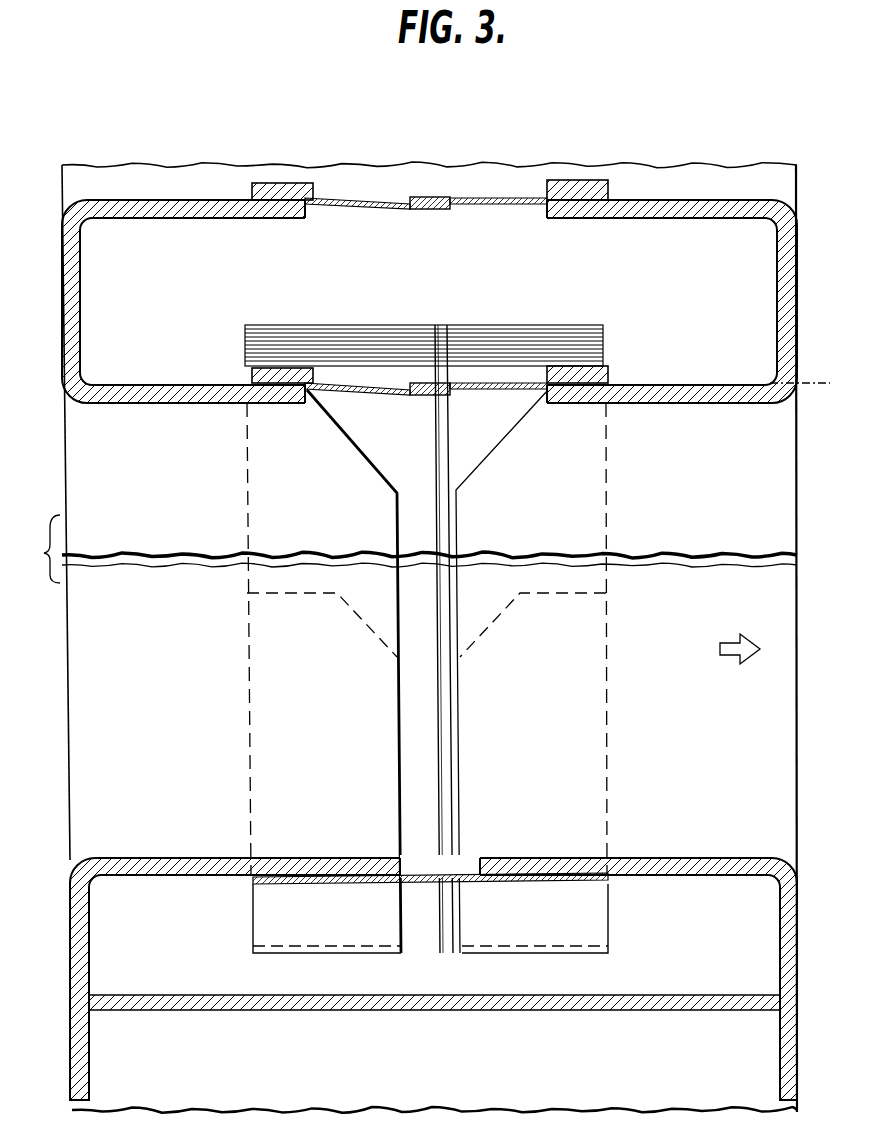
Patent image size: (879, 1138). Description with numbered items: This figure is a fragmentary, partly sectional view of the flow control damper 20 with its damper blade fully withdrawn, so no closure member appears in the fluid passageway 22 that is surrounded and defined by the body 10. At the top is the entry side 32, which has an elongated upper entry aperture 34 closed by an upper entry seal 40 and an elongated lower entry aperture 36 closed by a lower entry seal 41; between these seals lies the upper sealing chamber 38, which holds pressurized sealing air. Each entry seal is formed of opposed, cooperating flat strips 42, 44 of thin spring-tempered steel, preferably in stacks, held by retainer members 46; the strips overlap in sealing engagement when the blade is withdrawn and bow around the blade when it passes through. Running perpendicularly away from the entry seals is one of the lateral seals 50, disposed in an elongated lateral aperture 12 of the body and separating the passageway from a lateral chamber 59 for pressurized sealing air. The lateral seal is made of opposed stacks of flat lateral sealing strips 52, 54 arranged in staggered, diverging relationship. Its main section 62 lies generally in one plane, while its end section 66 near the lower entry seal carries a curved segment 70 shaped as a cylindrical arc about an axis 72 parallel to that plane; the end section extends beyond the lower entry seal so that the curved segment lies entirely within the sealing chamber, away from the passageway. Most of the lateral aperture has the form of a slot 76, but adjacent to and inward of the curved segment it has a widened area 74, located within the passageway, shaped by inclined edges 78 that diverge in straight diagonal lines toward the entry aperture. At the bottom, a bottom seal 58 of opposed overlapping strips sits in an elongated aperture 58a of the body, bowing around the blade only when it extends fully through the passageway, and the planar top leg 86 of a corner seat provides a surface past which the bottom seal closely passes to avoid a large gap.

The body 10 is at (806, 217).
The lateral aperture 12 is at (456, 535).
The damper 20 is at (810, 300).
The fluid passageway 22 is at (730, 688).
The entry side 32 is at (693, 222).
The upper entry aperture 34 is at (545, 195).
The lower entry aperture 36 is at (325, 370).
The upper sealing chamber 38 is at (611, 238).
The upper entry seal 40 is at (420, 196).
The lower entry seal 41 is at (507, 382).
The sealing strip 42 is at (345, 197).
The sealing strip 44 is at (462, 197).
The retainer member 46 is at (252, 378).
The lateral seal 50 is at (452, 505).
The lateral sealing strip 52 is at (452, 835).
The lateral sealing strip 54 is at (404, 812).
The bottom seal 58 is at (470, 880).
The elongated aperture 58a is at (404, 855).
The lateral chamber 59 is at (740, 937).
The main section 62 is at (399, 690).
The end section 66 is at (616, 346).
The curved segment 70 is at (495, 337).
The axis 72 is at (820, 383).
The widened area 74 is at (478, 465).
The slot 76 is at (400, 538).
The inclined edges 78 is at (352, 428).
The planar top leg 86 is at (608, 945).